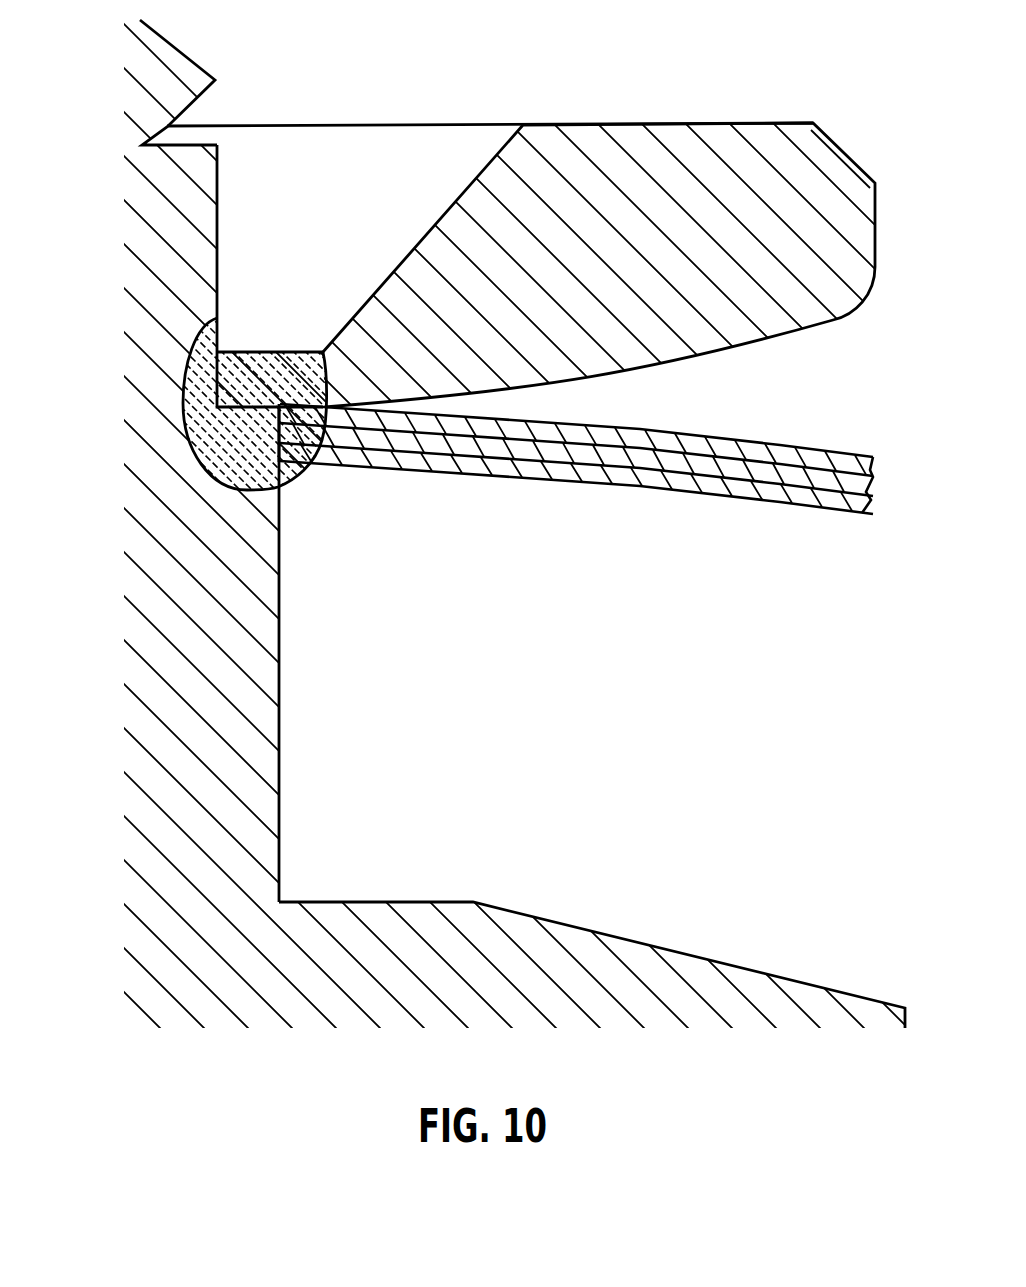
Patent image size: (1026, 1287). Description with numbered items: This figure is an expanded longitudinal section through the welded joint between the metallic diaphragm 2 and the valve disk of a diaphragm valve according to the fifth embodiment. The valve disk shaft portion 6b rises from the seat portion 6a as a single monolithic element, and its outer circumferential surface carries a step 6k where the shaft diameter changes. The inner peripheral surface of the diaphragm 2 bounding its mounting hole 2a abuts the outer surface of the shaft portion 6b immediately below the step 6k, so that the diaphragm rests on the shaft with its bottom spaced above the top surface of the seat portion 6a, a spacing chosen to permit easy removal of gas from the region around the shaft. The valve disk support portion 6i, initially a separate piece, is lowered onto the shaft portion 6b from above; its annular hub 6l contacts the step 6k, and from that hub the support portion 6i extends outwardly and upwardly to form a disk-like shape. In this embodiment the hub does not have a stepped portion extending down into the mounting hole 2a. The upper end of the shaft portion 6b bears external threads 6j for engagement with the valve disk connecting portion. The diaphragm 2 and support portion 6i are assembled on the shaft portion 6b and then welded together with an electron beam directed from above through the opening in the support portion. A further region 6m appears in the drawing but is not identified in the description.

The diaphragm 2 is at (627, 499).
The mounting hole 2a is at (262, 447).
The seat portion 6a is at (643, 1002).
The valve disk shaft portion 6b is at (153, 747).
The valve disk support portion 6i is at (612, 338).
The external threads 6j is at (165, 88).
The step 6k is at (253, 425).
The annular stepped hub 6l is at (270, 367).
The space 6m is at (368, 138).